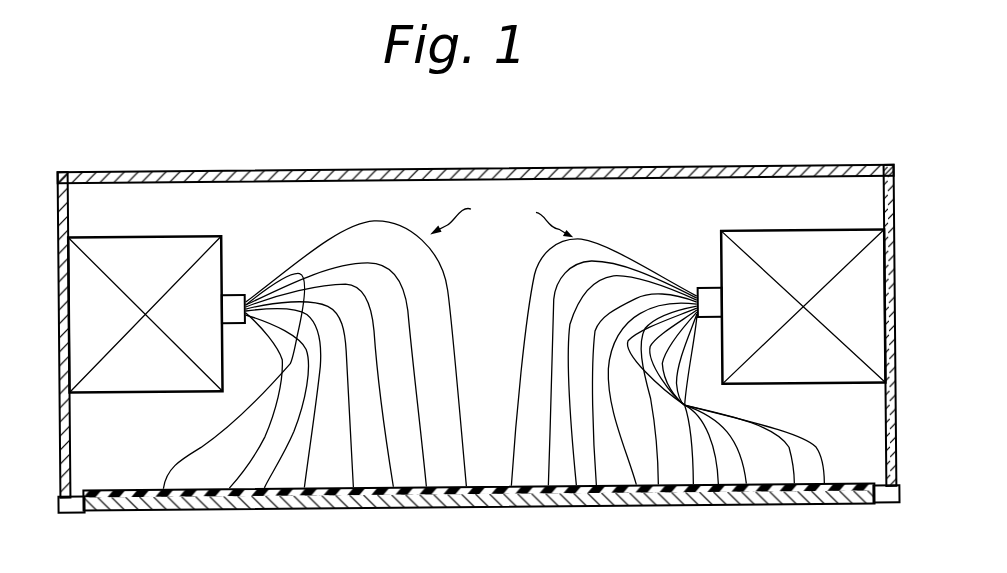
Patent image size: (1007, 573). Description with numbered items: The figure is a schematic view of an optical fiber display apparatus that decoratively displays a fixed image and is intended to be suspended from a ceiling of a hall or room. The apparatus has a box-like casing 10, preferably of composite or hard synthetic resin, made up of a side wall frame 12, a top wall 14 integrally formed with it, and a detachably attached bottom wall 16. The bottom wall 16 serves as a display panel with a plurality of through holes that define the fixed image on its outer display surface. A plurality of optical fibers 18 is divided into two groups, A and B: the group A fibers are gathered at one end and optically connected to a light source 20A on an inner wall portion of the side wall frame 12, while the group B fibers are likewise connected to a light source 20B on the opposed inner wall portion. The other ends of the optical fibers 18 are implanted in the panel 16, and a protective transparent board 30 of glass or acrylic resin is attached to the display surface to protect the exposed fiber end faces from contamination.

The box-like casing 10 is at (477, 326).
The side wall frame 12 is at (896, 208).
The top wall 14 is at (553, 168).
The bottom wall 16 is at (479, 480).
The optical fibers 18 is at (605, 247).
The light source 20A is at (222, 253).
The light source 20B is at (756, 233).
The protective transparent board 30 is at (517, 507).